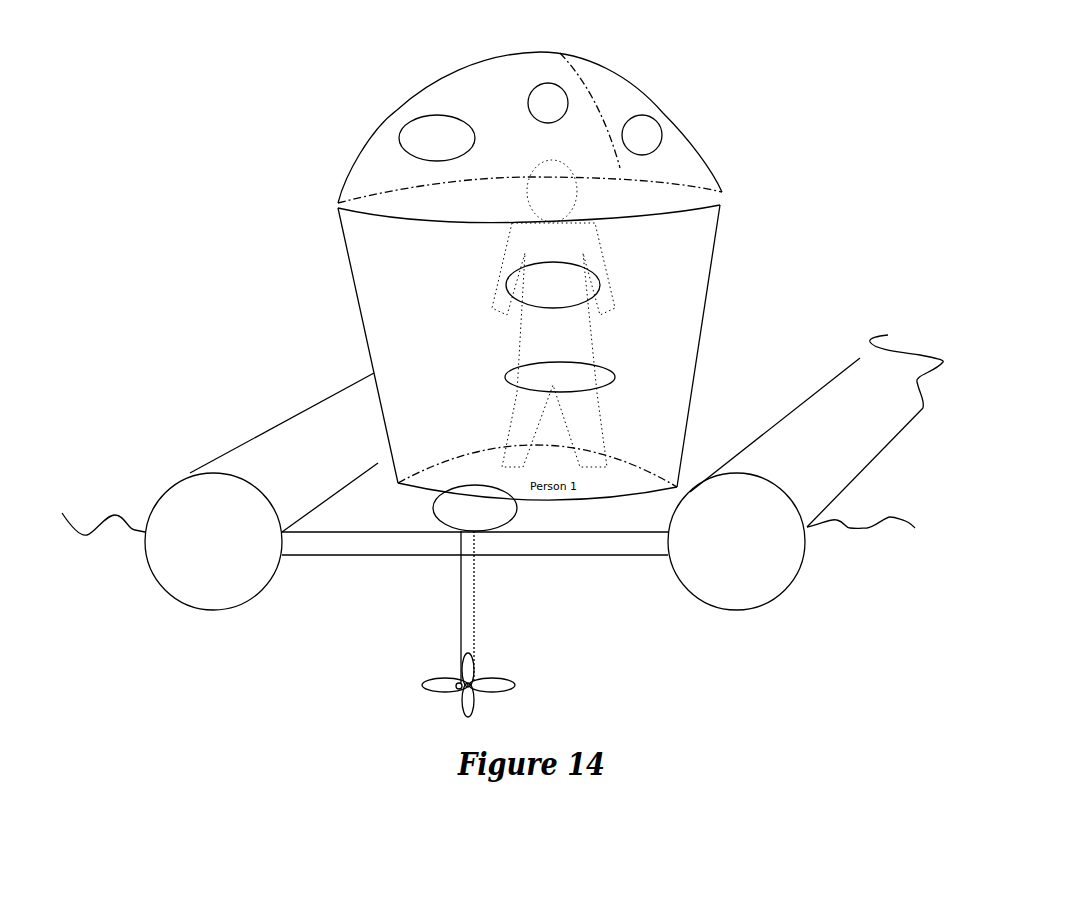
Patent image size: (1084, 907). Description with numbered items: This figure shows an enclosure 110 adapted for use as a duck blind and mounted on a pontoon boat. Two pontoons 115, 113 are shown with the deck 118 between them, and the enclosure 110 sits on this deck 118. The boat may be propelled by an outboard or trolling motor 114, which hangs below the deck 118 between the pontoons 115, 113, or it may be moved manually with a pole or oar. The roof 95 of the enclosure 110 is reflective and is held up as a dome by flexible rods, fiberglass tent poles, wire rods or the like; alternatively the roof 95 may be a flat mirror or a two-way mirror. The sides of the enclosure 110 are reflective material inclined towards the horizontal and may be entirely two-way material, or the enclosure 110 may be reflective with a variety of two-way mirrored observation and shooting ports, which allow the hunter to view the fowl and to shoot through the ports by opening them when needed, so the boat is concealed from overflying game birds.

The roof 95 is at (603, 107).
The enclosure 110 is at (695, 280).
The pontoon 113 is at (747, 567).
The outboard or trolling motor 114 is at (490, 511).
The pontoon 115 is at (227, 568).
The deck 118 is at (382, 525).